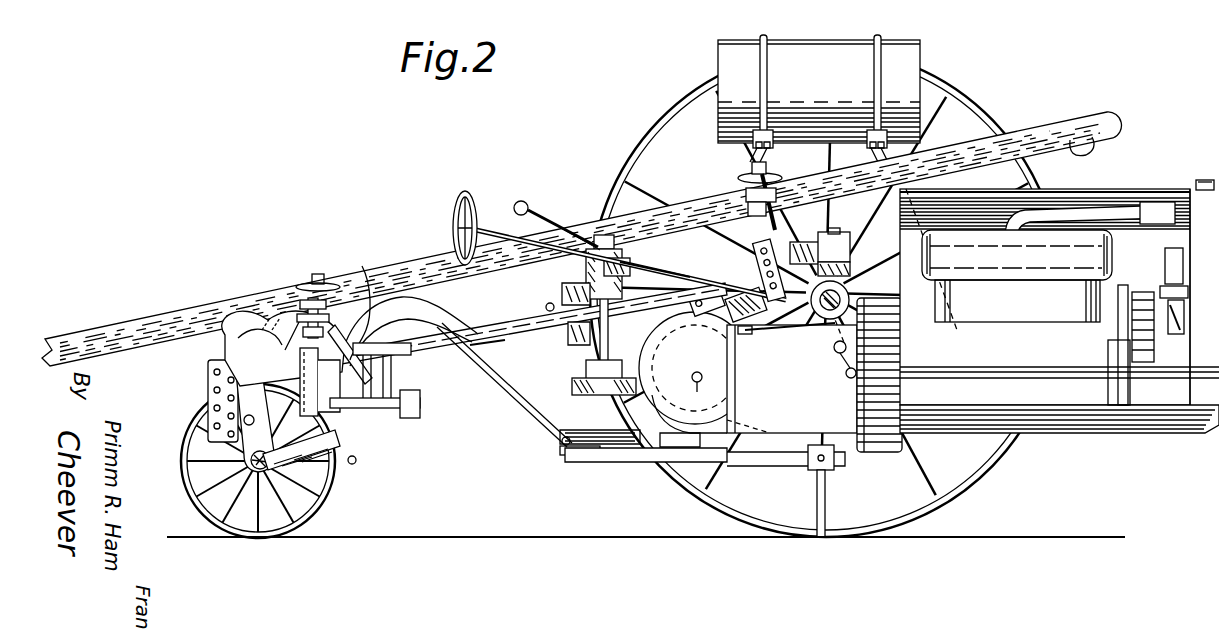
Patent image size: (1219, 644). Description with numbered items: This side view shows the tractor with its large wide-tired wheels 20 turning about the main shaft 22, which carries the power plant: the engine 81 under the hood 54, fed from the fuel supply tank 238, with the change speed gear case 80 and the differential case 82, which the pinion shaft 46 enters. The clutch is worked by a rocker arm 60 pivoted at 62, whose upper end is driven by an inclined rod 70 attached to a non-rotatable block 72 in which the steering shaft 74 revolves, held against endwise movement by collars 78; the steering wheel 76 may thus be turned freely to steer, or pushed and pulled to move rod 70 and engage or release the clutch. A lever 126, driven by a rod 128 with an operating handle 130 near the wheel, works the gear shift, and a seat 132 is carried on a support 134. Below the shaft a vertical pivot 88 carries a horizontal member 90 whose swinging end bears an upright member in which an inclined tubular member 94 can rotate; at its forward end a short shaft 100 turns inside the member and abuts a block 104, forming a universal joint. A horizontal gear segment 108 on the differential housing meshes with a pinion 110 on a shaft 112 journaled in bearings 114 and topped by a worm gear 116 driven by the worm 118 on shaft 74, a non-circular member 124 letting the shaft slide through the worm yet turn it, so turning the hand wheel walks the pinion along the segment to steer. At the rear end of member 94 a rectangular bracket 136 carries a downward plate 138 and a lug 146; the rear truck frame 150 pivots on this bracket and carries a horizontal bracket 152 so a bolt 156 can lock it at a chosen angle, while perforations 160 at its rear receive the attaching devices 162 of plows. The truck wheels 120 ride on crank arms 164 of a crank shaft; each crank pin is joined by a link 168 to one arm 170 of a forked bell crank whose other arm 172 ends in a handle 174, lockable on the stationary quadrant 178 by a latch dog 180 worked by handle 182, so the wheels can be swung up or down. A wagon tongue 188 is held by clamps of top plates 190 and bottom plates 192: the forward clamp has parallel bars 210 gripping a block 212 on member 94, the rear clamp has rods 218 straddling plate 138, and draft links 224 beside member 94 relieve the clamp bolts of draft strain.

The wheels 20 is at (960, 485).
The main shaft 22 is at (841, 298).
The shaft 46 is at (700, 388).
The hood 54 is at (1108, 190).
The rocker arm 60 is at (860, 322).
The pivot 62 is at (828, 350).
The rod 70 is at (788, 330).
The block 72 is at (695, 372).
The shaft 74 is at (488, 215).
The steering wheel 76 is at (468, 195).
The collars 78 is at (693, 303).
The change speed gear case 80 is at (792, 379).
The engine 81 is at (1017, 277).
The differential case 82 is at (684, 435).
The vertical pivot 88 is at (828, 472).
The horizontal member 90 is at (612, 462).
The inclined member 94 is at (485, 325).
The short shaft 100 is at (840, 250).
The block 104 is at (830, 240).
The horizontal gear segment 108 is at (565, 452).
The pinion 110 is at (548, 430).
The shaft 112 is at (582, 332).
The bearings 114 is at (585, 275).
The worm gear 116 is at (580, 248).
The worm 118 is at (612, 250).
The wheel mechanism 120 is at (320, 500).
The non-circular member 124 is at (556, 228).
The lever 126 is at (742, 320).
The rod 128 is at (680, 262).
The operating handle 130 is at (527, 203).
The seat 132 is at (440, 312).
The support 134 is at (506, 398).
The rectangular bracket 136 is at (380, 415).
The plate 138 is at (370, 430).
The lug 146 is at (420, 401).
The rear truck frame 150 is at (200, 452).
The horizontal bracket 152 is at (412, 420).
The bolt 156 is at (398, 386).
The perforations 160 is at (208, 372).
The attaching devices 162 is at (355, 463).
The crank arms 164 is at (295, 455).
The link 168 is at (250, 458).
The arm 170 is at (208, 392).
The arm 172 is at (272, 318).
The operating handle 174 is at (366, 318).
The stationary quadrant 178 is at (228, 318).
The latch dog 180 is at (285, 312).
The operating handle 182 is at (312, 318).
The tongue 188 is at (104, 335).
The top plates 190 is at (738, 182).
The bottom plates 192 is at (722, 215).
The bars 210 is at (792, 245).
The block 212 is at (757, 267).
The rods 218 is at (363, 314).
The draft links 224 is at (488, 348).
The supply tank 238 is at (819, 98).